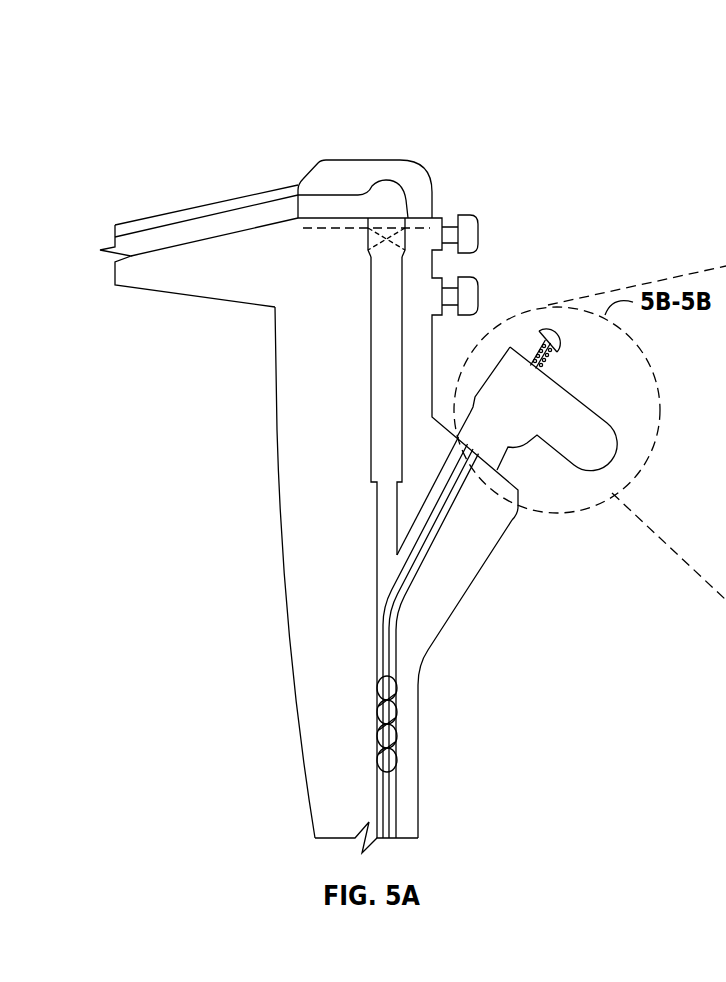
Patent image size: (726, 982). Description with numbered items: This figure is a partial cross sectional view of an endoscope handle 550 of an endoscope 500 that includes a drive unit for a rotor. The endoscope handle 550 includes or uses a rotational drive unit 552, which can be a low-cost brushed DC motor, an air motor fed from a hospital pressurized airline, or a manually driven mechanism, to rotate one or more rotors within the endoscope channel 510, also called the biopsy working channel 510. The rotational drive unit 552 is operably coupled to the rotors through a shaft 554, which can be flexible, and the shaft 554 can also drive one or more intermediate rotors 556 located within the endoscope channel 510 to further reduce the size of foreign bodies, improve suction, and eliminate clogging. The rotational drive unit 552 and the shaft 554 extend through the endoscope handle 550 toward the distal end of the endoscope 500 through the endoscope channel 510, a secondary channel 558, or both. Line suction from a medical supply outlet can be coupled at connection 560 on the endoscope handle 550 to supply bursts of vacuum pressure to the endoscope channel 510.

The endoscope 500 is at (270, 506).
The endoscope channel 510 is at (366, 385).
The endoscope handle 550 is at (208, 100).
The rotational drive unit 552 is at (512, 352).
The shaft 554 is at (399, 600).
The intermediate rotor 556 is at (416, 164).
The secondary channel 558 is at (447, 528).
The connection 560 is at (359, 239).